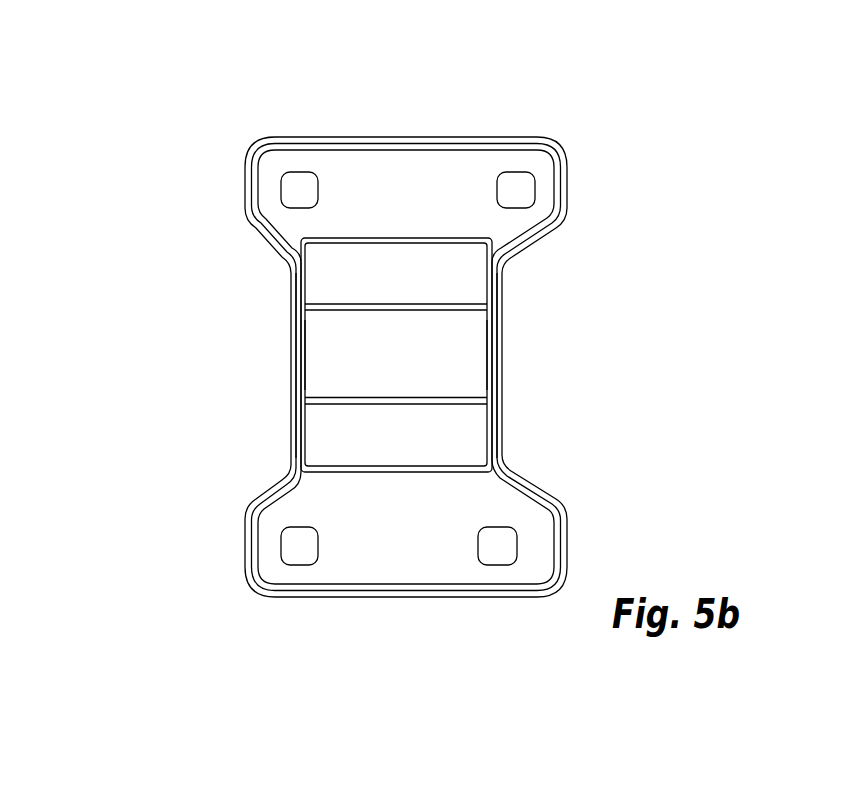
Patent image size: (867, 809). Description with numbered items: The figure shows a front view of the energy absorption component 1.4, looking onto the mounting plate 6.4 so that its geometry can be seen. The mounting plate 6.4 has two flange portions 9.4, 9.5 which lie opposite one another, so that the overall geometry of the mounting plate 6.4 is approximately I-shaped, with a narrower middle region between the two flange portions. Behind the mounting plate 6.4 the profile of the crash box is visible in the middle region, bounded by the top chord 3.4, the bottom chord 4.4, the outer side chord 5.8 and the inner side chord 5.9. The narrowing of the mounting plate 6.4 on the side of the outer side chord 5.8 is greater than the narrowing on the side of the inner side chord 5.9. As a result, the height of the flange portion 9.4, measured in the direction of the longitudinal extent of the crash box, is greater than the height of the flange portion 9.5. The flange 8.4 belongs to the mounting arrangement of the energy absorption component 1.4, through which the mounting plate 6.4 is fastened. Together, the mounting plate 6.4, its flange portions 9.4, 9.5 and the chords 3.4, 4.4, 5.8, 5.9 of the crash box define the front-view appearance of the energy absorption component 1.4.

The energy absorption component 1.4 is at (188, 220).
The top chord 3.4 is at (435, 230).
The bottom chord 4.4 is at (458, 478).
The outer side chord 5.8 is at (480, 375).
The inner side chord 5.9 is at (312, 375).
The mounting plate 6.4 is at (419, 213).
The flange 8.4 is at (395, 130).
The flange portion 9.4 is at (508, 352).
The flange portion 9.5 is at (284, 369).